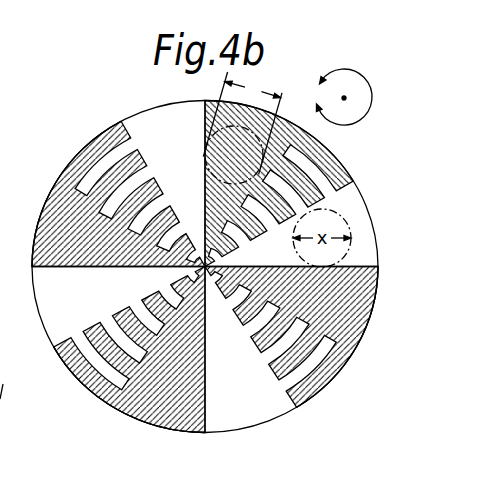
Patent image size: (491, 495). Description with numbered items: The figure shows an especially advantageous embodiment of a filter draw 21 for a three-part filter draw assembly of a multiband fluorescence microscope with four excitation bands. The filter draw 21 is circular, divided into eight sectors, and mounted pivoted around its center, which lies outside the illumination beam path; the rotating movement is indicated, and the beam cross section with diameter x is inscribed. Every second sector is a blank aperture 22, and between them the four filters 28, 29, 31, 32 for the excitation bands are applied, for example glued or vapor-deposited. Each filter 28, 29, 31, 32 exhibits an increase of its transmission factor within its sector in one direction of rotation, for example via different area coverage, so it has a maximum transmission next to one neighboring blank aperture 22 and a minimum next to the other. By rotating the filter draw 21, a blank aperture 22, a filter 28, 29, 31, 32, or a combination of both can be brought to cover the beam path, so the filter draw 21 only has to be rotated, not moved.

The filter draw 21 is at (80, 138).
The blank aperture 22 is at (140, 122).
The filter 28 is at (287, 123).
The filter 29 is at (360, 340).
The filter 31 is at (125, 413).
The filter 32 is at (48, 200).